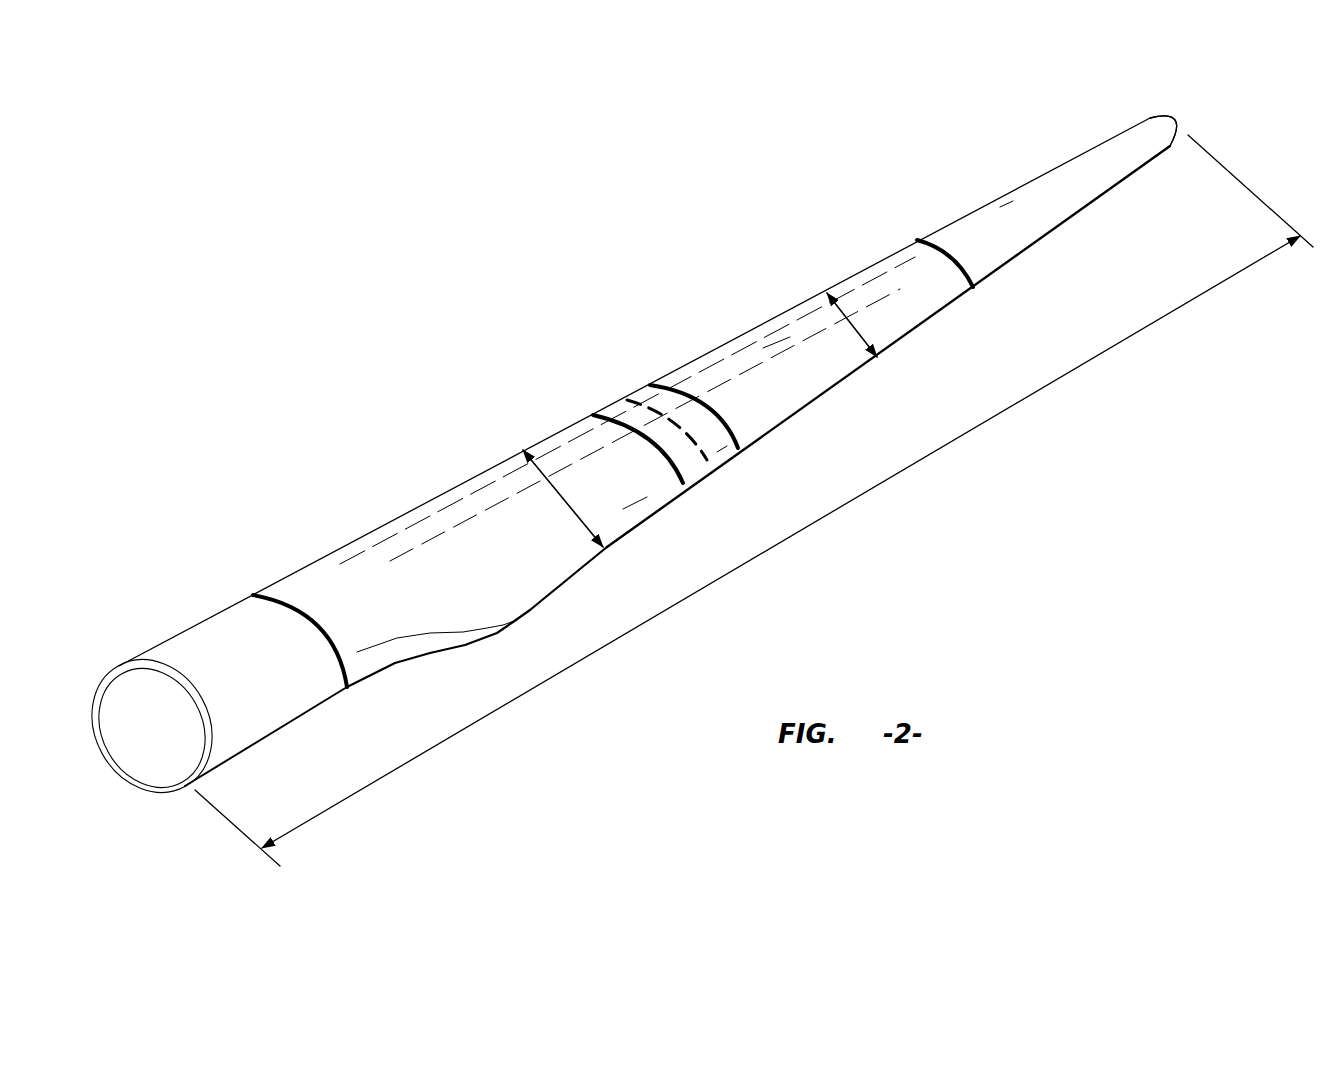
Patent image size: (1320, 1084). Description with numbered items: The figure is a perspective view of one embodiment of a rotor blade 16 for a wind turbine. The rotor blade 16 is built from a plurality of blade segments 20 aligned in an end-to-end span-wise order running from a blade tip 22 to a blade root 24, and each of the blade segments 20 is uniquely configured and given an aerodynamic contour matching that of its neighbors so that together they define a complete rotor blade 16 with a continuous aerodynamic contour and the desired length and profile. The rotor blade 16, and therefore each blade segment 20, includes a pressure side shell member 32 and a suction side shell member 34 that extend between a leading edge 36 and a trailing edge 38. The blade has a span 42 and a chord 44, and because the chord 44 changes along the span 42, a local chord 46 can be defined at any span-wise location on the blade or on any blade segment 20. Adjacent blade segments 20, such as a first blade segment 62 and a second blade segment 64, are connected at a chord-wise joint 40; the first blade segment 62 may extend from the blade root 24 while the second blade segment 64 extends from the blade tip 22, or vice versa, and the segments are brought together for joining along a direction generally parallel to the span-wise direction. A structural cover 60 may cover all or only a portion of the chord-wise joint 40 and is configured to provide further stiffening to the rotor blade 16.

The rotor blade 16 is at (303, 385).
The blade segments 20 is at (483, 455).
The blade tip 22 is at (1188, 113).
The blade root 24 is at (160, 747).
The pressure side shell member 32 is at (268, 692).
The suction side shell member 34 is at (497, 580).
The leading edge 36 is at (445, 490).
The trailing edge 38 is at (553, 597).
The chord-wise joint 40 is at (308, 612).
The span 42 is at (953, 442).
The chord 44 is at (593, 543).
The local chord 46 is at (857, 325).
The structural cover 60 is at (730, 460).
The first blade segment 62 is at (652, 513).
The second blade segment 64 is at (833, 383).